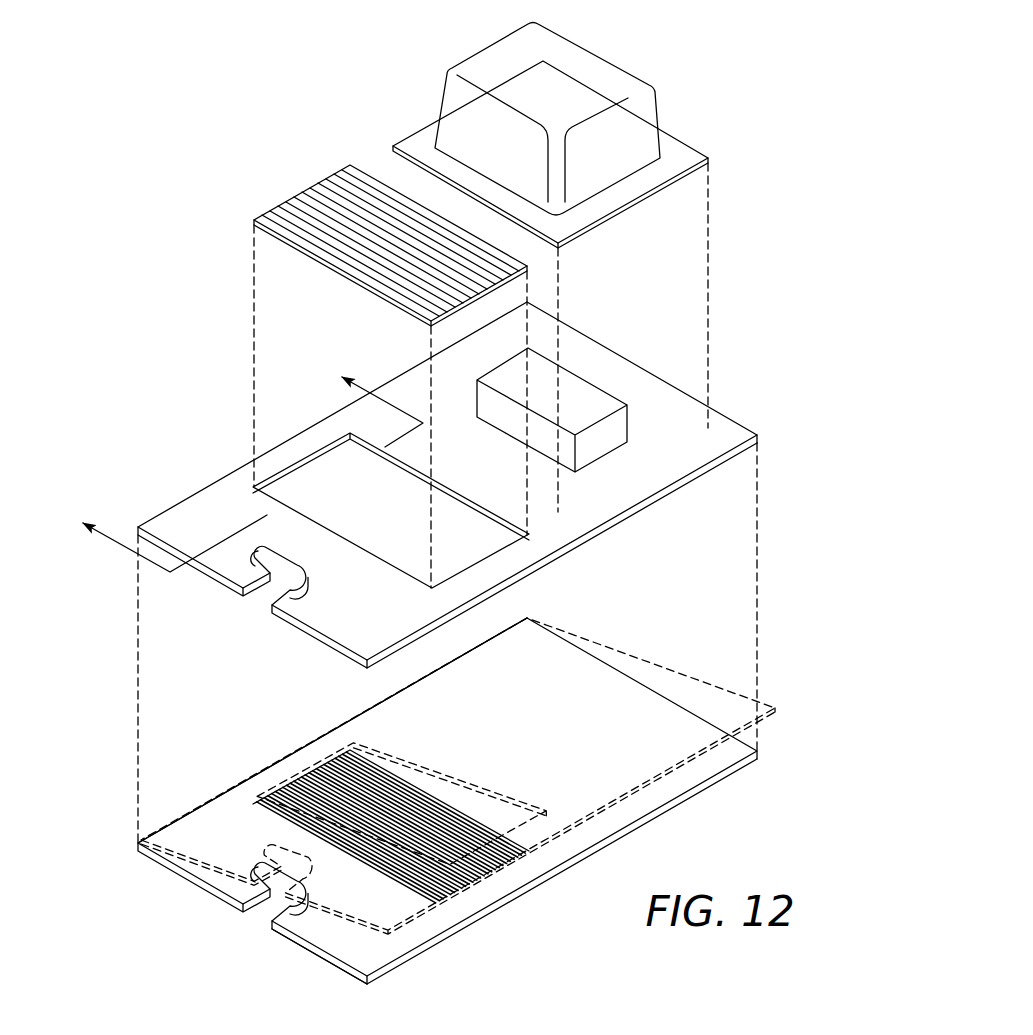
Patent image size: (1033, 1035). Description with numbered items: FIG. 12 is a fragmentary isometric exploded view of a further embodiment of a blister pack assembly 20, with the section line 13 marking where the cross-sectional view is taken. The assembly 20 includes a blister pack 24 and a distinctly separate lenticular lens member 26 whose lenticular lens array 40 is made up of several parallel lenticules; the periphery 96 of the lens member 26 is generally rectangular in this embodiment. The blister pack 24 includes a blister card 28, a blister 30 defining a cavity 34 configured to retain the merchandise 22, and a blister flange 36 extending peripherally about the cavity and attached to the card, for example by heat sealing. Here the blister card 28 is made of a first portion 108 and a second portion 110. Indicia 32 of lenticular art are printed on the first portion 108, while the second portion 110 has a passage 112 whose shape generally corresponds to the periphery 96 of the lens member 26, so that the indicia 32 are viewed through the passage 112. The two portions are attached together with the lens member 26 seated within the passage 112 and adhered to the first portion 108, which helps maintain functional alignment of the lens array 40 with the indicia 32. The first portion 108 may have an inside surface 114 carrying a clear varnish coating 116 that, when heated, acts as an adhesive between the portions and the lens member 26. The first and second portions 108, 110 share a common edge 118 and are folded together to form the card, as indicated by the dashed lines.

The blister pack assembly 20 is at (258, 70).
The merchandise 22 is at (590, 388).
The blister pack 24 is at (297, 75).
The lenticular lens member 26 is at (268, 178).
The blister card 28 is at (153, 465).
The blister 30 is at (443, 72).
The indicia of lenticular art 32 is at (290, 826).
The cavity 34 is at (582, 72).
The blister flange 36 is at (620, 193).
The lenticular lens array 40 is at (307, 183).
The periphery 96 is at (323, 267).
The first portion 108 is at (700, 804).
The second portion 110 is at (662, 495).
The passage 112 is at (343, 477).
The inside surface 114 is at (310, 946).
The clear varnish coating 116 is at (312, 947).
The common edge 118 is at (205, 805).
The section line 13- 13 is at (237, 464).